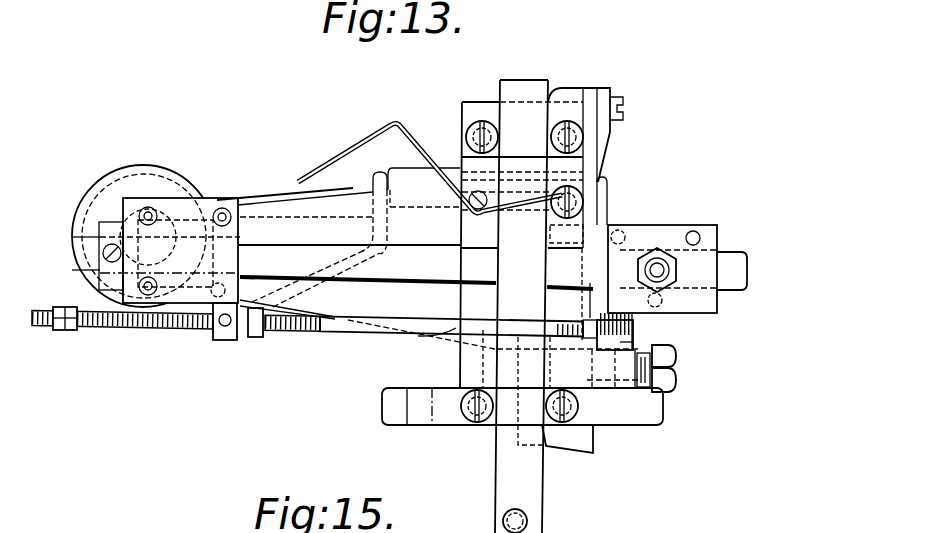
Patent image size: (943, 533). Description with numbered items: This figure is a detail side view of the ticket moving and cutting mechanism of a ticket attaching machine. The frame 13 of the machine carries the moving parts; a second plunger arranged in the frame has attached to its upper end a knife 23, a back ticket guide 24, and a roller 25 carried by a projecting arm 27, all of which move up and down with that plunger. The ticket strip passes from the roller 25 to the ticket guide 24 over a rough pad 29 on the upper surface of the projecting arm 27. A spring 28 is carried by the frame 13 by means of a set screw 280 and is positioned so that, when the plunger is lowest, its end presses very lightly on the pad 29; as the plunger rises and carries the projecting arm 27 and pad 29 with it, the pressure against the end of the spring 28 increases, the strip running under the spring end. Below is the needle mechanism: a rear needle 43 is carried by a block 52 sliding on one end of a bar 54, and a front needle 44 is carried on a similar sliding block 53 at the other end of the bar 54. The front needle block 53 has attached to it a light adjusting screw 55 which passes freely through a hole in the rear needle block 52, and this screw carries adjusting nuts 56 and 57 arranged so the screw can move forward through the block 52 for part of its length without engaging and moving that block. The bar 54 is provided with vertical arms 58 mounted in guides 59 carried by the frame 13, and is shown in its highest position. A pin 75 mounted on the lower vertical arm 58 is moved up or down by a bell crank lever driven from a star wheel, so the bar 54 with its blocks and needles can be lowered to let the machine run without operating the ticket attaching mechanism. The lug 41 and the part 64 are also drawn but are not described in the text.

The frame 13 is at (521, 232).
The knife 23 is at (608, 212).
The back ticket guide 24 is at (413, 168).
The roller 25 is at (110, 171).
The projecting arm 27 is at (349, 248).
The spring 28 is at (393, 124).
The rough pad 29 is at (279, 190).
The lug 41 is at (609, 146).
The rear needle 43 is at (372, 179).
The front needle 44 is at (608, 188).
The block 52 is at (198, 207).
The sliding block 53 is at (627, 326).
The bar 54 is at (737, 277).
The adjusting screw 55 is at (348, 329).
The adjusting nut 56 is at (75, 332).
The adjusting nut 57 is at (243, 337).
The vertical arm 58 is at (521, 83).
The guide 59 is at (569, 90).
The bracket 64 is at (81, 280).
The pin 75 is at (527, 521).
The set screw 280 is at (581, 193).